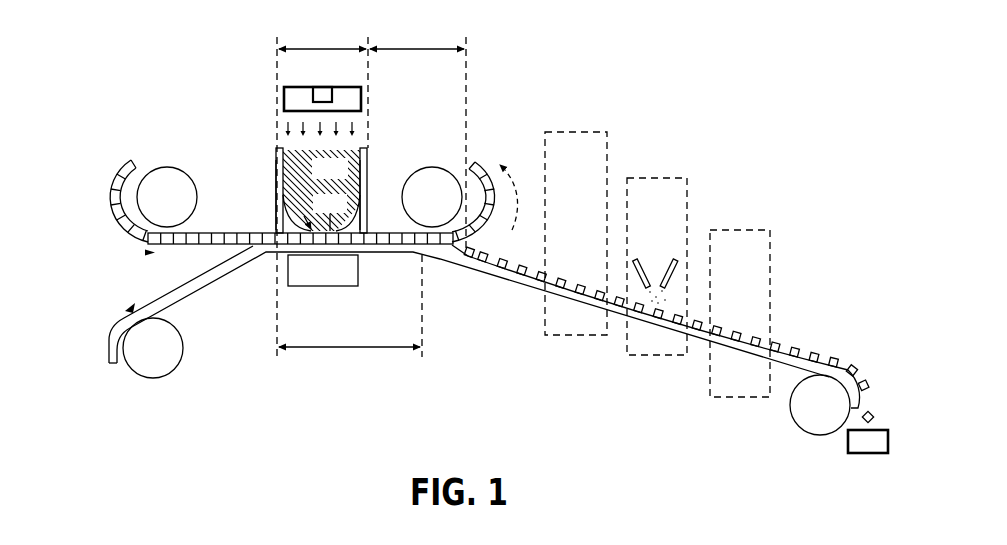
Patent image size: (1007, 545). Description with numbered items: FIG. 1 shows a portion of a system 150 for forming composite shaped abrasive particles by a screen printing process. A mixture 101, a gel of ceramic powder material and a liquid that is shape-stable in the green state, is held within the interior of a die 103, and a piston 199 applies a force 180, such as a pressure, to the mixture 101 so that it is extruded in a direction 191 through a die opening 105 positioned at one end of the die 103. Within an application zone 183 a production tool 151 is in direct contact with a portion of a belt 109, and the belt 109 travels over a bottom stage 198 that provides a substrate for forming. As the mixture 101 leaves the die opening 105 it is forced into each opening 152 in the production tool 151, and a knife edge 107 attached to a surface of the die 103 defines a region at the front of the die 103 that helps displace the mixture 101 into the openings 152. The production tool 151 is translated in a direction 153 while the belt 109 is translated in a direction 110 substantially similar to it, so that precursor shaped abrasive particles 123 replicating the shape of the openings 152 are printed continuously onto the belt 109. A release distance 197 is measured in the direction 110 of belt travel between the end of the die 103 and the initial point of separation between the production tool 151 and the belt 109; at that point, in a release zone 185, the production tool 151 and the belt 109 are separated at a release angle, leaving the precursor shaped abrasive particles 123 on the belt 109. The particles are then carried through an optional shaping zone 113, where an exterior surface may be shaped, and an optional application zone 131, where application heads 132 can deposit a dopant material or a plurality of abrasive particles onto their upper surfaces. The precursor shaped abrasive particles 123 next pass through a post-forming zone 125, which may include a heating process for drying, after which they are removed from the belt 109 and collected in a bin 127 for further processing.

The system 150 is at (55, 103).
The piston 199 is at (290, 96).
The application zone 183 is at (322, 187).
The release zone 185 is at (418, 133).
The release distance 197 is at (350, 313).
The force 180 is at (355, 128).
The die opening 105 is at (275, 150).
The production tool 151 is at (274, 215).
The die 103 is at (369, 150).
The knife edge 107 is at (367, 178).
The mixture 101 is at (347, 177).
The direction 191 is at (324, 212).
The opening 152 is at (200, 245).
The direction 153 is at (126, 242).
The belt 109 is at (192, 293).
The direction 110 is at (108, 323).
The bottom stage 198 is at (312, 286).
The precursor shaped abrasive particles 123 is at (483, 265).
The shaping zone 113 is at (580, 132).
The application zone 131 is at (660, 178).
The application heads 132 is at (650, 256).
The post-forming zone 125 is at (730, 230).
The bin 127 is at (852, 442).